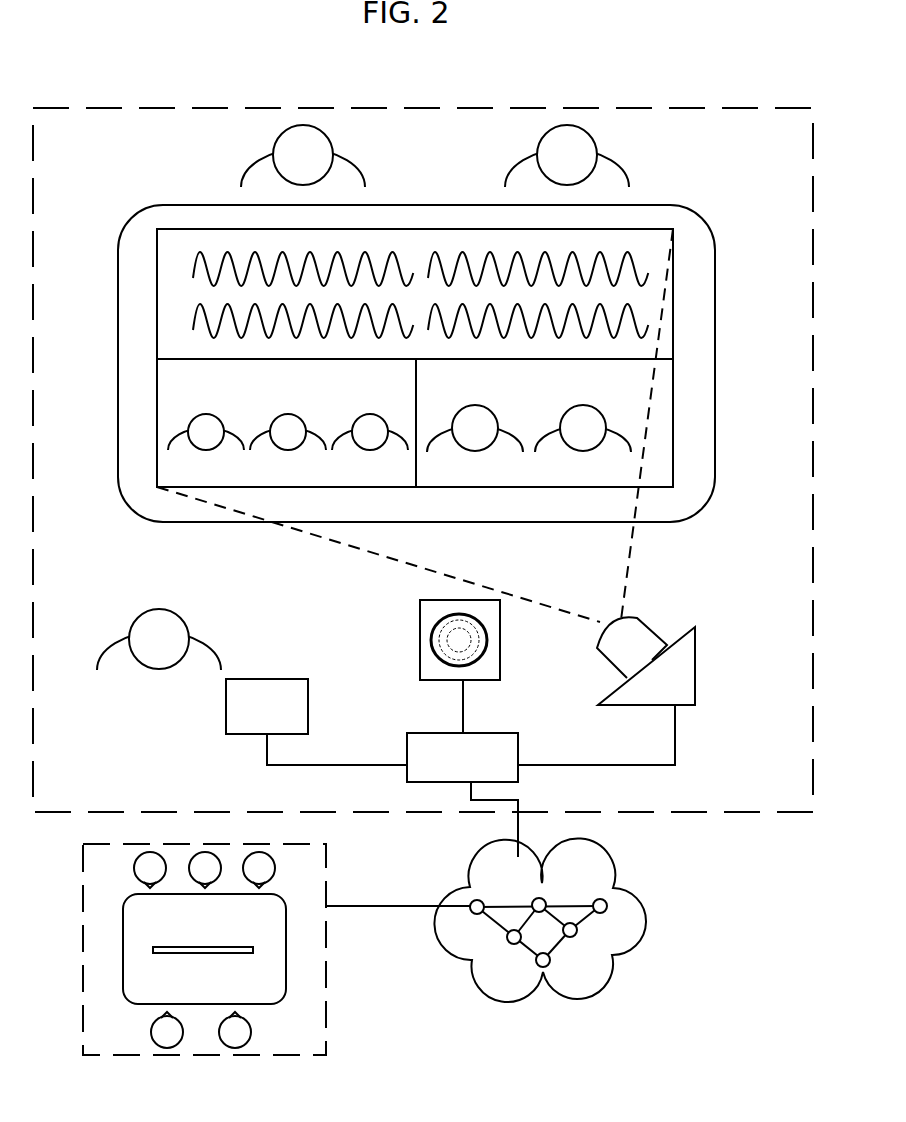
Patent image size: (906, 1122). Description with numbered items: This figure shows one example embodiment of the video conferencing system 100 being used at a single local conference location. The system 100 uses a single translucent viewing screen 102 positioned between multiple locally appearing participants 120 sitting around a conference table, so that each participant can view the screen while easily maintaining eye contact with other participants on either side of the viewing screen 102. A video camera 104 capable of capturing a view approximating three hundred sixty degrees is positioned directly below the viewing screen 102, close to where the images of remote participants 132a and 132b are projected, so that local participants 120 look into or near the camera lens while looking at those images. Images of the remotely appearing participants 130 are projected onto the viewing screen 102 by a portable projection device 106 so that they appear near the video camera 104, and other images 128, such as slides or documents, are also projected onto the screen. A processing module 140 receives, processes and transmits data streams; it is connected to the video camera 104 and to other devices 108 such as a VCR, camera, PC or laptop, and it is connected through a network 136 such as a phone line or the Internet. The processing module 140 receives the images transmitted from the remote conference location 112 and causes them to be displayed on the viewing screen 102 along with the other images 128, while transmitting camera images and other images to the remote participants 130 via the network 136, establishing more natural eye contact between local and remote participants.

The video conferencing system 100 is at (124, 100).
The viewing screen 102 is at (717, 437).
The video camera 104 is at (410, 655).
The portable projection device 106 is at (695, 670).
The other devices 108 is at (267, 706).
The remote conference location 112 is at (335, 1013).
The locally appearing participants 120 is at (357, 162).
The other images 128 is at (187, 296).
The remotely appearing participants 130 is at (356, 416).
The image of remote participant 132a is at (212, 481).
The image of remote participant 132b is at (470, 481).
The network 136 is at (650, 935).
The processing module 140 is at (462, 757).